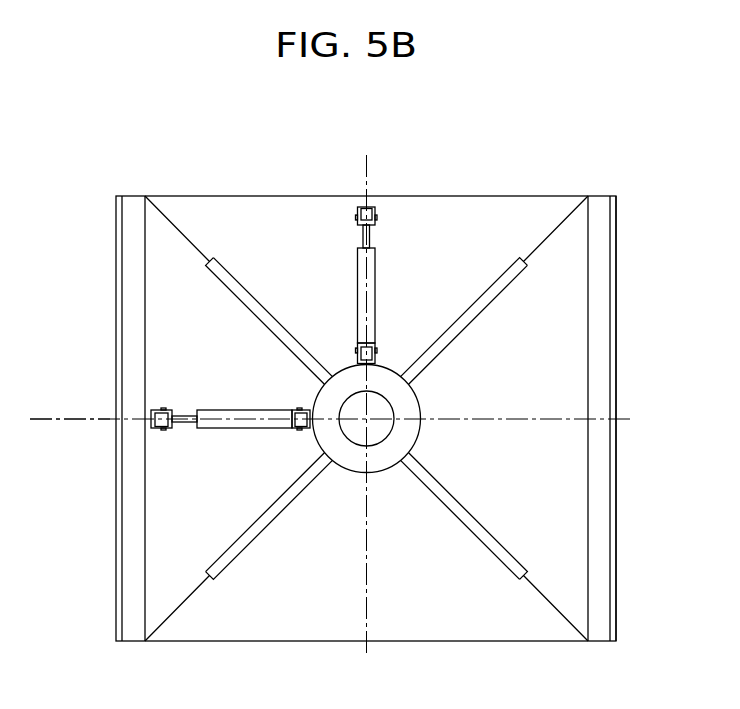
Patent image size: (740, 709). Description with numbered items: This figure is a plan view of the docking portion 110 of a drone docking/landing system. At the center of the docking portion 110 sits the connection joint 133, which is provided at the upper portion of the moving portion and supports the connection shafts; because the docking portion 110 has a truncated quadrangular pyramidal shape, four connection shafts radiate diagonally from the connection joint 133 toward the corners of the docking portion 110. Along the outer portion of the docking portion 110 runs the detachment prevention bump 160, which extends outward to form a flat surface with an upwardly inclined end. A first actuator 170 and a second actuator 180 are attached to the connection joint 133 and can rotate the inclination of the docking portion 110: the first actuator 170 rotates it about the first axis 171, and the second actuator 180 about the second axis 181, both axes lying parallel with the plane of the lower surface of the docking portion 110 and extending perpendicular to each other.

The docking portion 110 is at (497, 197).
The connection joint 133 is at (348, 467).
The detachment prevention bump 160 is at (615, 377).
The first actuator 170 is at (223, 415).
The first axis 171 is at (63, 420).
The second actuator 180 is at (370, 283).
The second axis 181 is at (366, 175).